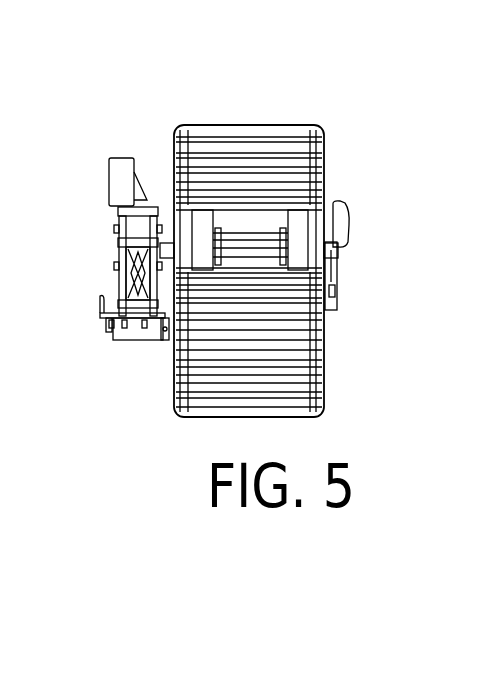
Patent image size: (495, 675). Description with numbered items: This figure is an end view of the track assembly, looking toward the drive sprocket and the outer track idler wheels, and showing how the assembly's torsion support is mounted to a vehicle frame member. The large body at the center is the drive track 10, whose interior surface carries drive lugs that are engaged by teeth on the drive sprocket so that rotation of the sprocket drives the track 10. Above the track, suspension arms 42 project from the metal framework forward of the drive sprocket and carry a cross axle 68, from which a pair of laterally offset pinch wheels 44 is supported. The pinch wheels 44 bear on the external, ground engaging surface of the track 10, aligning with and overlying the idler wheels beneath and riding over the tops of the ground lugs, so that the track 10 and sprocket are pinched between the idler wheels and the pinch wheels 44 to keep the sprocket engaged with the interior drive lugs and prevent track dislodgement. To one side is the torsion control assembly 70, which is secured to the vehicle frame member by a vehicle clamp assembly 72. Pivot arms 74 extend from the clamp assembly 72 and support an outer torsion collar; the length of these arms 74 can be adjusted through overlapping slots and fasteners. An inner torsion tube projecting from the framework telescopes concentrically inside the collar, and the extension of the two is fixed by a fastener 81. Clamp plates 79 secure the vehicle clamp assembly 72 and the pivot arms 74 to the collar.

The drive track 10 is at (205, 125).
The suspension arms 42 is at (333, 280).
The pinch wheels 44 is at (290, 217).
The cross axle 68 is at (252, 250).
The torsion control assembly 70 is at (108, 260).
The vehicle clamp assembly 72 is at (153, 192).
The pivot arms 74 is at (117, 250).
The clamp plates 79 is at (123, 335).
The fastener 81 is at (163, 343).